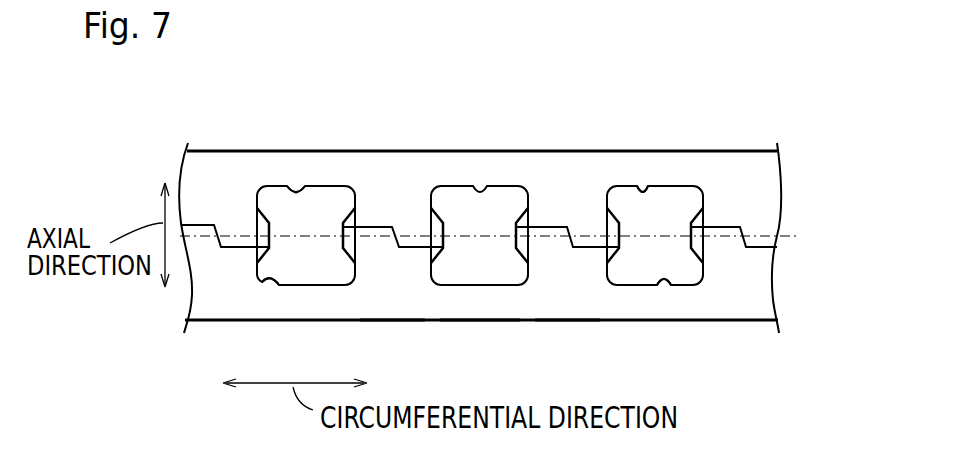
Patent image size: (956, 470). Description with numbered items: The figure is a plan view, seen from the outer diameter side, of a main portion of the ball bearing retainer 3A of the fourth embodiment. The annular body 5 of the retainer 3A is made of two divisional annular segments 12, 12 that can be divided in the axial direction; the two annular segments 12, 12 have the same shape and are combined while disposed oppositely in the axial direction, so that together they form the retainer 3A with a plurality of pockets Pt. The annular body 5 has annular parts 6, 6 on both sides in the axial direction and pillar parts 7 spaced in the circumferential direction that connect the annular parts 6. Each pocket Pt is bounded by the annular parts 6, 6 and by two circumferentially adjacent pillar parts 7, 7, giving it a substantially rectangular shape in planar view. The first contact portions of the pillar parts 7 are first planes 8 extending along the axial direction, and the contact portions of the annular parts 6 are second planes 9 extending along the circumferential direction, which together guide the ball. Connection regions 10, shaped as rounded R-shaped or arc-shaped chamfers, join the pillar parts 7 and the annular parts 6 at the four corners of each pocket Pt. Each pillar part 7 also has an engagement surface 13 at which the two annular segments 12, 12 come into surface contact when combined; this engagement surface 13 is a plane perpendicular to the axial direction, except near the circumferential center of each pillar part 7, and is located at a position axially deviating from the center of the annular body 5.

The retainer 3A is at (720, 103).
The annular body 5 is at (843, 172).
The annular part 6 is at (482, 303).
The pillar part 7 is at (388, 275).
The first plane 8 is at (336, 246).
The second plane 9 is at (642, 191).
The connection region 10 is at (458, 190).
The annular segment 12 is at (772, 179).
The engagement surface 13 is at (203, 222).
The pocket Pt is at (305, 190).